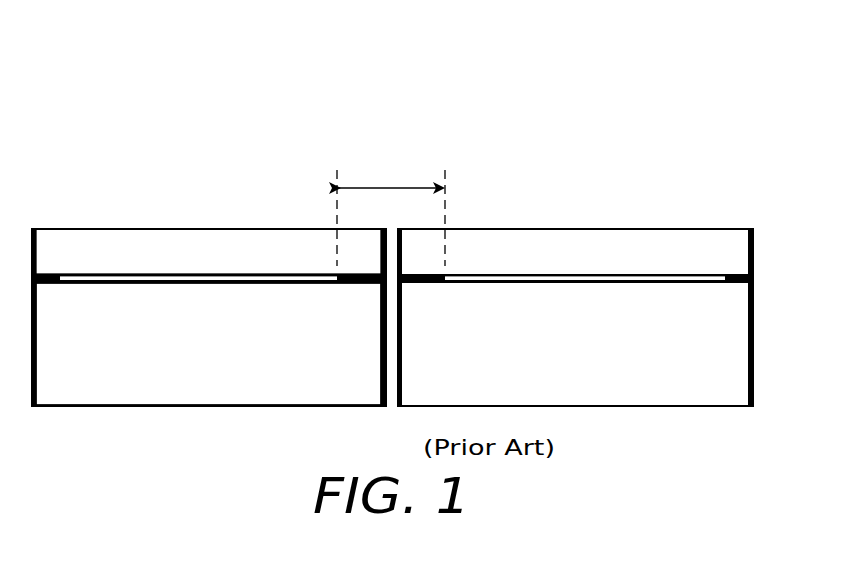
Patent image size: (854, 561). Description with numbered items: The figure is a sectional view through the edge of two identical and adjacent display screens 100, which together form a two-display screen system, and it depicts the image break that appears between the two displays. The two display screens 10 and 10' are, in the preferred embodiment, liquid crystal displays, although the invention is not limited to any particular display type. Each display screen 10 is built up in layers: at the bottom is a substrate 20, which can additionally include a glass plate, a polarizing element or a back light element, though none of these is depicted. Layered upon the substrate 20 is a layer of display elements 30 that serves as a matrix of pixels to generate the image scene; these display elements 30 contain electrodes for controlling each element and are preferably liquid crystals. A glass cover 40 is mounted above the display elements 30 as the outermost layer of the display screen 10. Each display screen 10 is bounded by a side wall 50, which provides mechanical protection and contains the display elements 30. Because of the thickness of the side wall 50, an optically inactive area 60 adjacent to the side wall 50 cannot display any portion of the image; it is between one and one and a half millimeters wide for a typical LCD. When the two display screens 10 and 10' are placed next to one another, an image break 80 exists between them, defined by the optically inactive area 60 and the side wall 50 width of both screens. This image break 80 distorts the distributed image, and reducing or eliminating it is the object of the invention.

The display screen 10 is at (209, 227).
The display screen 10' is at (575, 227).
The substrate 20 is at (100, 308).
The layer of display elements 30 is at (150, 281).
The glass cover 40 is at (205, 252).
The side wall 50 is at (383, 363).
The optically inactive area 60 is at (353, 284).
The image break 80 is at (389, 188).
The adjacent display screens 100 is at (612, 63).